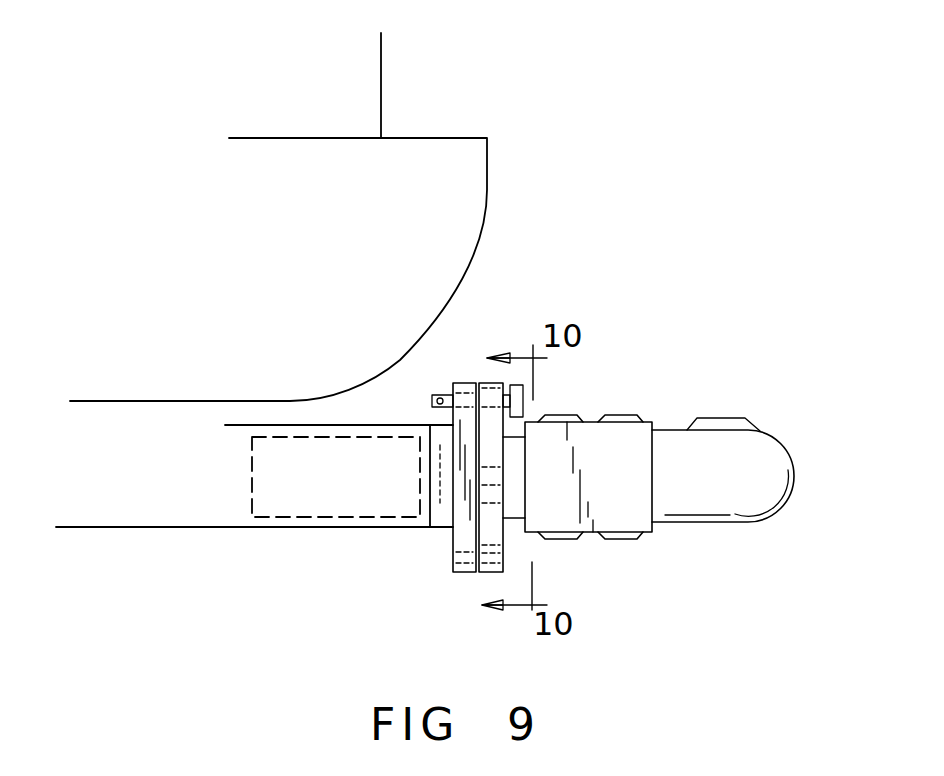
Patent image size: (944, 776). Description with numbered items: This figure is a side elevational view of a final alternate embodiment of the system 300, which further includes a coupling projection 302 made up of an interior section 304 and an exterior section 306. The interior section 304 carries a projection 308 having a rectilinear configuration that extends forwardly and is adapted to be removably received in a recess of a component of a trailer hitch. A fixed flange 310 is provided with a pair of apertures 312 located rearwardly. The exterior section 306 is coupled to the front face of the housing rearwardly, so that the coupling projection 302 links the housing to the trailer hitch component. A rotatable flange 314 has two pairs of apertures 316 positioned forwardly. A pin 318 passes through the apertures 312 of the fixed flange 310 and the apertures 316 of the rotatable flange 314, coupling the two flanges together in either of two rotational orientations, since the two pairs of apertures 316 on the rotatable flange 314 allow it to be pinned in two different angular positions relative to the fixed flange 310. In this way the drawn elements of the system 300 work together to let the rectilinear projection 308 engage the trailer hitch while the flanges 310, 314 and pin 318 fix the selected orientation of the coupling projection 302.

The system 300 is at (594, 271).
The coupling projection 302 is at (476, 383).
The interior section 304 is at (453, 530).
The exterior section 306 is at (503, 533).
The projection 308 is at (438, 425).
The fixed flange 310 is at (457, 383).
The apertures 312 is at (463, 400).
The rotatable flange 314 is at (490, 573).
The apertures 316 is at (503, 560).
The pin 318 is at (432, 396).